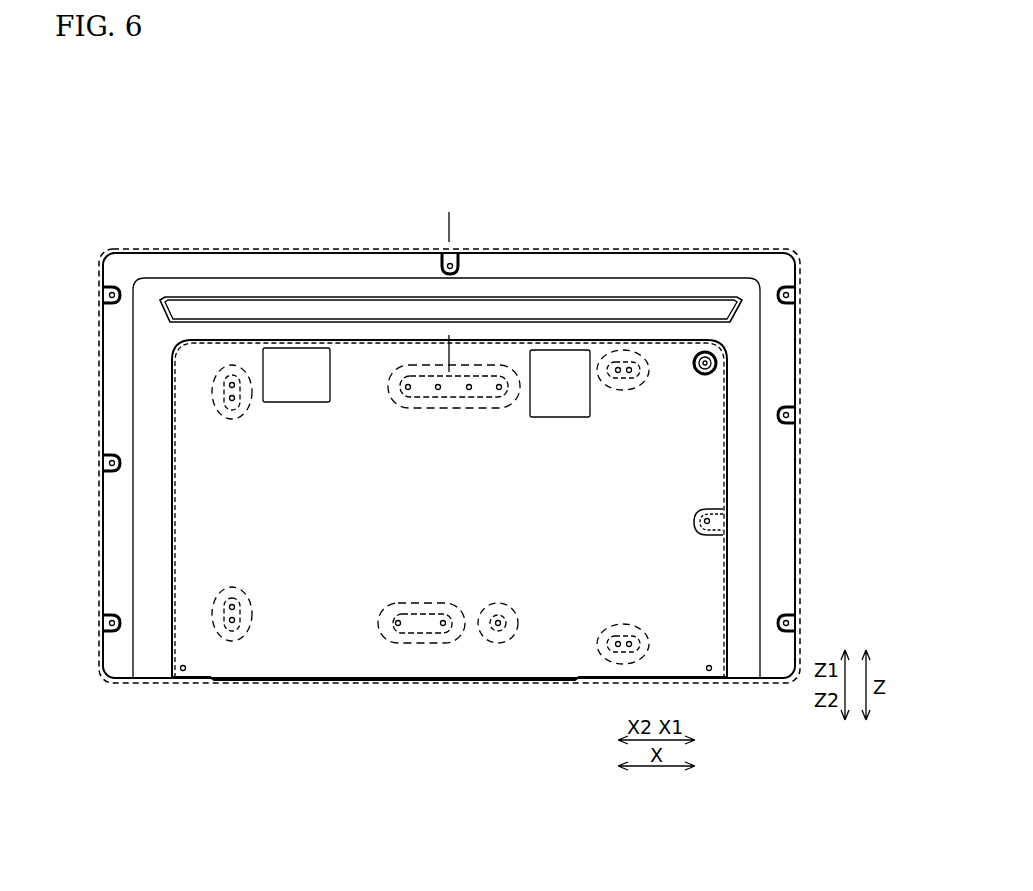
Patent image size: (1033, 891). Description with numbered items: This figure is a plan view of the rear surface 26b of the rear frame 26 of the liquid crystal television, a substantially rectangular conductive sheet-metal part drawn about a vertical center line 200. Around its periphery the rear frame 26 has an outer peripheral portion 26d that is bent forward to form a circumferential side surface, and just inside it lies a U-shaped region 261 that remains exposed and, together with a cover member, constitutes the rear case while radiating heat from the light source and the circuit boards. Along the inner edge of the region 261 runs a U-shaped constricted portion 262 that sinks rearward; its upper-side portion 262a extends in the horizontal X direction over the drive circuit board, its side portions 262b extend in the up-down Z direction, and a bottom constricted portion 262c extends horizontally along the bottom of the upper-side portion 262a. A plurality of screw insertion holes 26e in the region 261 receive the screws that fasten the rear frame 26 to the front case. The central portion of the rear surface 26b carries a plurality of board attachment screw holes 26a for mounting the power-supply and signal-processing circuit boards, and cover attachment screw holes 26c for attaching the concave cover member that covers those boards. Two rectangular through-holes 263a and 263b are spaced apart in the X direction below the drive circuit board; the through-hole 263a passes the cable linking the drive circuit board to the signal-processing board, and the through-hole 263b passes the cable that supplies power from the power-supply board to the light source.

The rear frame 26 is at (270, 266).
The board attachment screw holes 26a is at (230, 388).
The rear surface 26b is at (445, 680).
The cover attachment screw holes 26c is at (705, 376).
The outer peripheral portion 26d is at (103, 360).
The screw insertion holes 26e is at (106, 292).
The center line 200 is at (451, 217).
The U-shaped region 261 is at (135, 685).
The constricted portion 262 is at (740, 682).
The upper-side portion of the constricted portion 262a is at (621, 286).
The side portions of the constricted portion 262b is at (148, 505).
The bottom constricted portion 262c is at (358, 302).
The through-hole 263a is at (585, 418).
The through-hole 263b is at (300, 403).